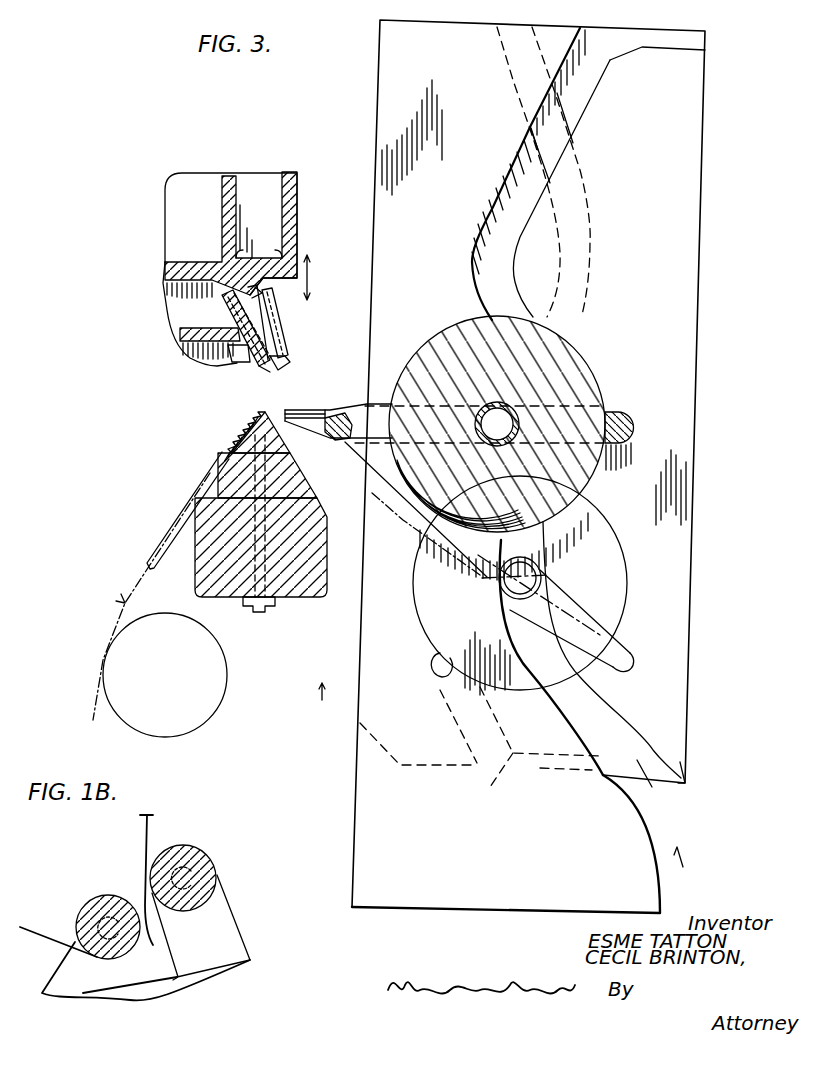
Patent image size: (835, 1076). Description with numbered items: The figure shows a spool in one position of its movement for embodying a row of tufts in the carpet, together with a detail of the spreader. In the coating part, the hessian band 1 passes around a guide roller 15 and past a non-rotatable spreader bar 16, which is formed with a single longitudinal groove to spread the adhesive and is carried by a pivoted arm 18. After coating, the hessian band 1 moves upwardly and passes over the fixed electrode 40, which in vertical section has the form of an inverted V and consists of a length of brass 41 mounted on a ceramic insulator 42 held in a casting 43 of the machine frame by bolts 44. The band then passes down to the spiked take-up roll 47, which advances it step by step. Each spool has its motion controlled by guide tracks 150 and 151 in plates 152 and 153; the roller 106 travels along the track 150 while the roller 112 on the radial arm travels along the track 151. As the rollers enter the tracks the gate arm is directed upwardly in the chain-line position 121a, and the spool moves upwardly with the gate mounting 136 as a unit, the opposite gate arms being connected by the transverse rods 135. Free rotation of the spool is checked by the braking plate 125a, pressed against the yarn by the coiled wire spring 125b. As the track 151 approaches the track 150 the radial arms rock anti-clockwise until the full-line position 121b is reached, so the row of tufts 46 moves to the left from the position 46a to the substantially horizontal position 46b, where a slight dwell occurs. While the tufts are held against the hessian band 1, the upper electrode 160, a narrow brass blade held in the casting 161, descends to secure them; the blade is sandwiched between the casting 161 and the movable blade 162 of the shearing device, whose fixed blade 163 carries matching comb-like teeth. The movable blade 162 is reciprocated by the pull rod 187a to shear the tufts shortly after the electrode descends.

In FIG. 3, the hessian band 1 is at (326, 636).
In FIG. 1B, the hessian band 1 is at (147, 828).
In FIG. 1B, the guide roller 15 is at (92, 910).
In FIG. 1B, the spreader bar 16 is at (193, 863).
In FIG. 1B, the arm 18 is at (220, 937).
In FIG. 3, the fixed electrode 40 is at (275, 510).
In FIG. 3, the length of brass 41 is at (265, 435).
In FIG. 3, the ceramic insulator 42 is at (285, 485).
In FIG. 3, the casting 43 is at (290, 552).
In FIG. 3, the bolts 44 is at (252, 580).
In FIG. 3, the row of tufts 46 is at (248, 425).
In FIG. 3, the position of tufts 46a is at (348, 440).
In FIG. 3, the position of tufts 46b is at (266, 384).
In FIG. 3, the take-up roll 47 is at (213, 735).
In FIG. 3, the roller 106 is at (527, 565).
In FIG. 3, the roller 112 is at (440, 672).
In FIG. 3, the gate arm position 121a is at (403, 517).
In FIG. 3, the gate arm position 121b is at (337, 410).
In FIG. 3, the braking plate 125a is at (606, 607).
In FIG. 3, the coiled wire spring 125b is at (555, 360).
In FIG. 3, the transverse rods 135 is at (633, 428).
In FIG. 3, the gate mounting 136 is at (290, 411).
In FIG. 3, the guide track 150 is at (583, 710).
In FIG. 3, the guide track 151 is at (512, 68).
In FIG. 3, the plate 152 is at (650, 503).
In FIG. 3, the plate 153 is at (657, 788).
In FIG. 3, the upper electrode 160 is at (262, 366).
In FIG. 3, the casting 161 is at (285, 218).
In FIG. 3, the movable blade 162 is at (283, 350).
In FIG. 3, the fixed blade 163 is at (275, 330).
In FIG. 3, the pull rod 187a is at (273, 305).